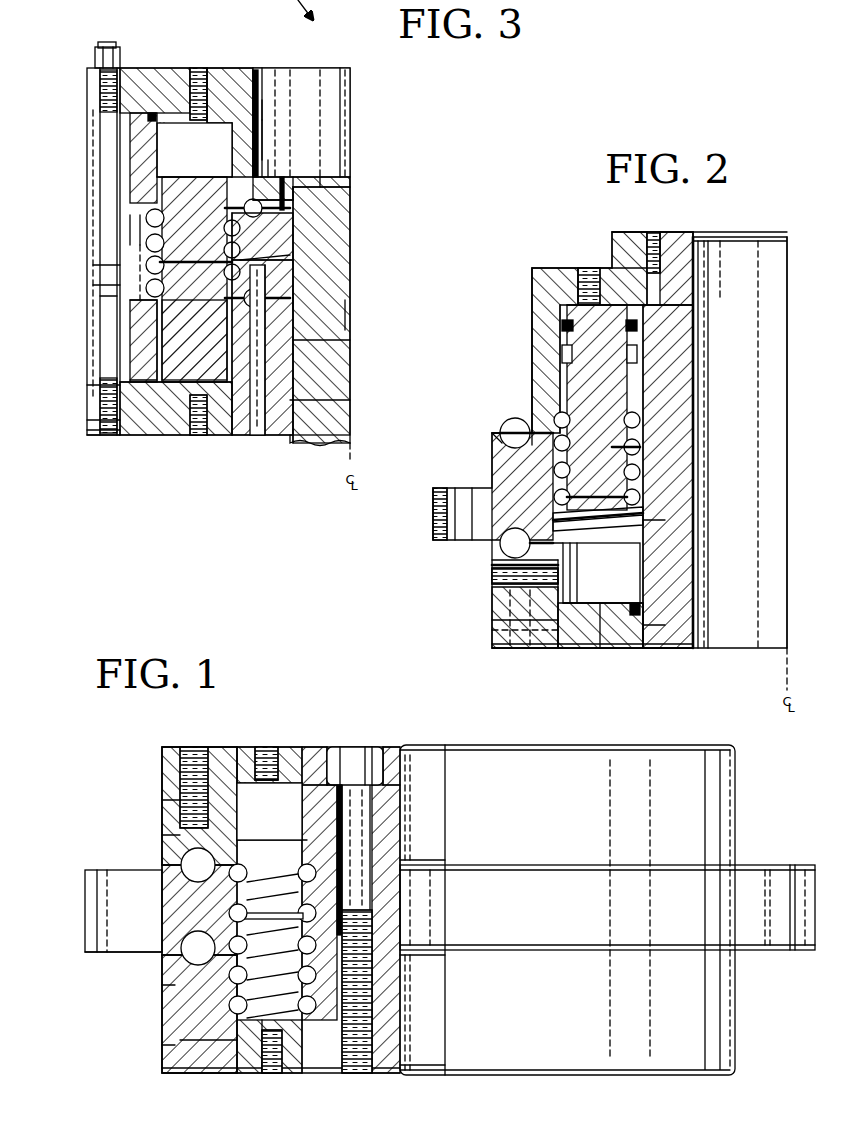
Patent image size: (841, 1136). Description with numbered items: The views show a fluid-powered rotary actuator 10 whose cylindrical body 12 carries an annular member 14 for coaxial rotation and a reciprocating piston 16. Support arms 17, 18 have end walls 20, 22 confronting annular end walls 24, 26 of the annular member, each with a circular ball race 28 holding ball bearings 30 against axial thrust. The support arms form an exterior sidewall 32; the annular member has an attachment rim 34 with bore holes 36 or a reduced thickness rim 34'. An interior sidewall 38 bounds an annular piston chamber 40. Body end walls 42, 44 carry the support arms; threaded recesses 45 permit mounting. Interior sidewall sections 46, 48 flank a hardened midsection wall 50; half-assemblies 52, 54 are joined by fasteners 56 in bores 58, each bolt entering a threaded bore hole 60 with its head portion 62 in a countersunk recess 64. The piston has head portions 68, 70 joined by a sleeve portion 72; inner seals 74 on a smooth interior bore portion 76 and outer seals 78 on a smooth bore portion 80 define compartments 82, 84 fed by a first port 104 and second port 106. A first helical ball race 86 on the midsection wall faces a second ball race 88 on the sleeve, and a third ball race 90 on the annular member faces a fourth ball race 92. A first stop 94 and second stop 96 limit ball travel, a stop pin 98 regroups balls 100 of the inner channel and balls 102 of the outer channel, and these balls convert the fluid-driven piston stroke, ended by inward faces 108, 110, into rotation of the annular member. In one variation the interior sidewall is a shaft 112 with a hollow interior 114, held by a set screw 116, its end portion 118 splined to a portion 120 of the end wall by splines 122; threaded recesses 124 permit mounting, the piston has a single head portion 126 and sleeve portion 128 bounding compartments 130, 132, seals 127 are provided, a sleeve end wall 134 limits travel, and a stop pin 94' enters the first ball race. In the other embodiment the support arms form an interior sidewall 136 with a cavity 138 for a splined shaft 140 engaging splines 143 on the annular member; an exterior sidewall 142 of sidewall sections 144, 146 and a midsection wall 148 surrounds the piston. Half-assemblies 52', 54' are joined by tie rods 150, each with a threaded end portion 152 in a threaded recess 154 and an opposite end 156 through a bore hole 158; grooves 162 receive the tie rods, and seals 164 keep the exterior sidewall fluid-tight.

In FIG. 2, the fluid-powered rotary actuator 10 is at (560, 206).
In FIG. 1, the fluid-powered rotary actuator 10 is at (270, 672).
In FIG. 3, the body 12 is at (212, 78).
In FIG. 1, the body 12 is at (210, 748).
In FIG. 3, the annular member 14 is at (330, 197).
In FIG. 2, the annular member 14 is at (500, 453).
In FIG. 1, the annular member 14 is at (115, 957).
In FIG. 3, the piston 16 is at (137, 355).
In FIG. 2, the piston 16 is at (690, 330).
In FIG. 1, the piston 16 is at (212, 1073).
In FIG. 3, the support arm 17 is at (262, 113).
In FIG. 2, the support arm 17 is at (498, 618).
In FIG. 1, the support arm 17 is at (167, 832).
In FIG. 3, the support arm 18 is at (270, 437).
In FIG. 2, the support arm 18 is at (540, 340).
In FIG. 1, the support arm 18 is at (173, 1027).
In FIG. 3, the end wall 20 is at (297, 200).
In FIG. 2, the end wall 20 is at (500, 565).
In FIG. 1, the end wall 20 is at (168, 815).
In FIG. 3, the end wall 22 is at (325, 262).
In FIG. 2, the end wall 22 is at (497, 432).
In FIG. 1, the end wall 22 is at (185, 958).
In FIG. 3, the annular end wall 24 is at (300, 192).
In FIG. 2, the annular end wall 24 is at (500, 550).
In FIG. 1, the annular end wall 24 is at (97, 895).
In FIG. 3, the annular end wall 26 is at (170, 298).
In FIG. 2, the annular end wall 26 is at (568, 400).
In FIG. 1, the annular end wall 26 is at (140, 953).
In FIG. 3, the circular ball race 28 is at (300, 270).
In FIG. 2, the circular ball race 28 is at (500, 425).
In FIG. 1, the circular ball race 28 is at (177, 860).
In FIG. 3, the ball bearings 30 is at (262, 205).
In FIG. 2, the ball bearings 30 is at (504, 422).
In FIG. 1, the ball bearings 30 is at (188, 874).
In FIG. 2, the exterior sidewall 32 is at (535, 275).
In FIG. 1, the exterior sidewall 32 is at (163, 750).
In FIG. 1, the attachment rim 34 is at (73, 908).
In FIG. 2, the reduced thickness rim 34' is at (419, 514).
In FIG. 2, the bore holes 36 is at (460, 497).
In FIG. 1, the bore holes 36 is at (110, 867).
In FIG. 2, the interior sidewall 38 is at (715, 355).
In FIG. 1, the interior sidewall 38 is at (313, 780).
In FIG. 3, the annular piston chamber 40 is at (148, 203).
In FIG. 2, the annular piston chamber 40 is at (695, 533).
In FIG. 1, the annular piston chamber 40 is at (403, 983).
In FIG. 3, the body end wall 42 is at (214, 82).
In FIG. 2, the body end wall 42 is at (582, 630).
In FIG. 1, the body end wall 42 is at (300, 760).
In FIG. 3, the body end wall 44 is at (248, 437).
In FIG. 2, the body end wall 44 is at (640, 250).
In FIG. 1, the body end wall 44 is at (330, 1075).
In FIG. 1, the threaded recesses 45 is at (190, 750).
In FIG. 1, the interior sidewall section 46 is at (407, 800).
In FIG. 1, the interior sidewall section 48 is at (403, 1010).
In FIG. 1, the midsection wall 50 is at (403, 866).
In FIG. 1, the half-assembly 52 is at (185, 785).
In FIG. 3, the half-assembly 52' is at (155, 63).
In FIG. 1, the half-assembly 54 is at (163, 1092).
In FIG. 3, the half-assembly 54' is at (97, 460).
In FIG. 1, the fastener 56 is at (348, 785).
In FIG. 1, the bores 58 is at (382, 800).
In FIG. 1, the threaded bore hole 60 is at (363, 1063).
In FIG. 1, the head portion 62 is at (363, 763).
In FIG. 1, the countersunk recess 64 is at (305, 783).
In FIG. 3, the annular head portion 68 is at (193, 217).
In FIG. 1, the annular head portion 68 is at (278, 840).
In FIG. 3, the annular head portion 70 is at (255, 440).
In FIG. 1, the annular head portion 70 is at (270, 1080).
In FIG. 3, the sleeve portion 72 is at (138, 343).
In FIG. 1, the sleeve portion 72 is at (172, 1043).
In FIG. 3, the inner seal 74 is at (300, 370).
In FIG. 2, the inner seal 74 is at (704, 280).
In FIG. 1, the inner seal 74 is at (320, 1075).
In FIG. 3, the smooth interior bore portion 76 is at (240, 150).
In FIG. 2, the smooth interior bore portion 76 is at (700, 305).
In FIG. 1, the smooth interior bore portion 76 is at (330, 795).
In FIG. 3, the outer seal 78 is at (170, 172).
In FIG. 2, the outer seal 78 is at (538, 317).
In FIG. 1, the outer seal 78 is at (177, 1068).
In FIG. 3, the smooth bore portion 80 is at (170, 146).
In FIG. 2, the smooth bore portion 80 is at (562, 330).
In FIG. 1, the smooth bore portion 80 is at (235, 808).
In FIG. 3, the fluid-tight compartment 82 is at (228, 133).
In FIG. 1, the fluid-tight compartment 82 is at (273, 783).
In FIG. 3, the fluid-tight compartment 84 is at (208, 437).
In FIG. 1, the fluid-tight compartment 84 is at (302, 1075).
In FIG. 3, the first helical ball race 86 is at (272, 165).
In FIG. 1, the first helical ball race 86 is at (318, 888).
In FIG. 3, the second helical ball race 88 is at (310, 345).
In FIG. 2, the second helical ball race 88 is at (670, 465).
In FIG. 1, the second helical ball race 88 is at (327, 920).
In FIG. 3, the third helical ball race 90 is at (150, 228).
In FIG. 2, the third helical ball race 90 is at (553, 475).
In FIG. 1, the third helical ball race 90 is at (316, 868).
In FIG. 3, the fourth helical ball race 92 is at (320, 330).
In FIG. 2, the fourth helical ball race 92 is at (562, 355).
In FIG. 1, the fourth helical ball race 92 is at (243, 1075).
In FIG. 3, the first stop 94 is at (388, 315).
In FIG. 1, the first stop 94 is at (423, 907).
In FIG. 2, the first stop pin 94' is at (682, 440).
In FIG. 3, the second stop 96 is at (148, 305).
In FIG. 1, the second stop 96 is at (225, 975).
In FIG. 3, the stop pin 98 is at (315, 215).
In FIG. 2, the stop pin 98 is at (645, 503).
In FIG. 1, the stop pin 98 is at (250, 942).
In FIG. 3, the balls 100 is at (310, 252).
In FIG. 2, the balls 100 is at (650, 440).
In FIG. 1, the balls 100 is at (447, 866).
In FIG. 3, the balls 102 is at (300, 235).
In FIG. 2, the balls 102 is at (660, 478).
In FIG. 1, the balls 102 is at (230, 933).
In FIG. 3, the first port 104 is at (195, 75).
In FIG. 2, the first port 104 is at (497, 590).
In FIG. 1, the first port 104 is at (263, 752).
In FIG. 3, the second port 106 is at (190, 440).
In FIG. 2, the second port 106 is at (595, 268).
In FIG. 1, the second port 106 is at (287, 1075).
In FIG. 3, the inward face 108 is at (167, 120).
In FIG. 2, the inward face 108 is at (548, 640).
In FIG. 1, the inward face 108 is at (238, 783).
In FIG. 3, the inward face 110 is at (170, 437).
In FIG. 2, the inward face 110 is at (655, 240).
In FIG. 1, the inward face 110 is at (190, 1075).
In FIG. 2, the shaft 112 is at (678, 255).
In FIG. 2, the hollow interior 114 is at (780, 247).
In FIG. 2, the set screw 116 is at (660, 290).
In FIG. 2, the end portion 118 is at (652, 640).
In FIG. 2, the corresponding portion 120 is at (617, 640).
In FIG. 2, the intermeshing splines 122 is at (640, 640).
In FIG. 2, the threaded recesses 124 is at (510, 645).
In FIG. 2, the single head portion 126 is at (578, 280).
In FIG. 2, the conventional seals 127 is at (712, 233).
In FIG. 2, the sleeve portion 128 is at (705, 365).
In FIG. 2, the fluid-tight compartment 130 is at (620, 233).
In FIG. 2, the second fluid-tight compartment 132 is at (620, 570).
In FIG. 2, the end wall 134 is at (690, 520).
In FIG. 3, the interior sidewall 136 is at (262, 108).
In FIG. 3, the cylindrical cavity 138 is at (340, 80).
In FIG. 3, the splined shaft 140 is at (335, 300).
In FIG. 3, the exterior sidewall 142 is at (148, 117).
In FIG. 3, the splines 143 is at (330, 185).
In FIG. 3, the exterior sidewall section 144 is at (137, 135).
In FIG. 3, the exterior sidewall section 146 is at (150, 372).
In FIG. 3, the midsection wall 148 is at (146, 240).
In FIG. 3, the tie rods 150 is at (93, 150).
In FIG. 3, the threaded end portion 152 is at (105, 405).
In FIG. 3, the threaded recess 154 is at (105, 425).
In FIG. 3, the opposite end 156 is at (100, 46).
In FIG. 3, the bore hole 158 is at (106, 62).
In FIG. 3, the longitudinally extending grooves 162 is at (100, 275).
In FIG. 3, the conventional seals 164 is at (108, 86).